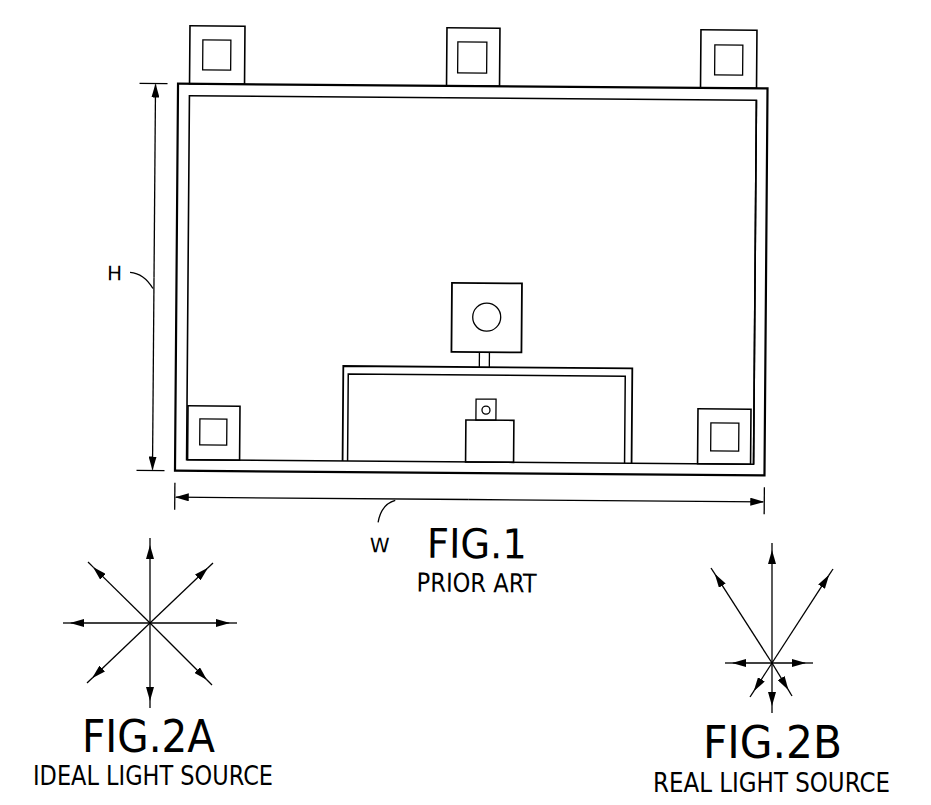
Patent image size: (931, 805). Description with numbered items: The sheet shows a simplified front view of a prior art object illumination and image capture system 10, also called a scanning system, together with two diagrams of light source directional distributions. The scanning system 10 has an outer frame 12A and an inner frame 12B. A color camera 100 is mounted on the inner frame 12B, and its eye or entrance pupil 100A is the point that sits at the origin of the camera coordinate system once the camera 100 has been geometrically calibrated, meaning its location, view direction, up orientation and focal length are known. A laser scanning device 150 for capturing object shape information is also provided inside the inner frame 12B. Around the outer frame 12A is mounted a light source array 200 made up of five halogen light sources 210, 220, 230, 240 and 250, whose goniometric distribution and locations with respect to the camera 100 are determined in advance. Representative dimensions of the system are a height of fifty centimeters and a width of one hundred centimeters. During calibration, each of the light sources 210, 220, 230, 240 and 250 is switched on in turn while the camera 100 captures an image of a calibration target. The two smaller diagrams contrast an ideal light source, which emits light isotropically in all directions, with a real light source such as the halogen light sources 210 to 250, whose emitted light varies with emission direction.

The object illumination and image capture system 10 is at (788, 138).
The outer frame 12A is at (757, 227).
The inner frame 12B is at (616, 369).
The color camera 100 is at (523, 292).
The entrance pupil 100A is at (497, 323).
The laser scanning device 150 is at (497, 408).
The light source array 200 is at (270, 143).
The halogen light source 210 is at (707, 406).
The halogen light source 220 is at (743, 28).
The halogen light source 230 is at (488, 30).
The halogen light source 240 is at (229, 28).
The halogen light source 250 is at (231, 407).